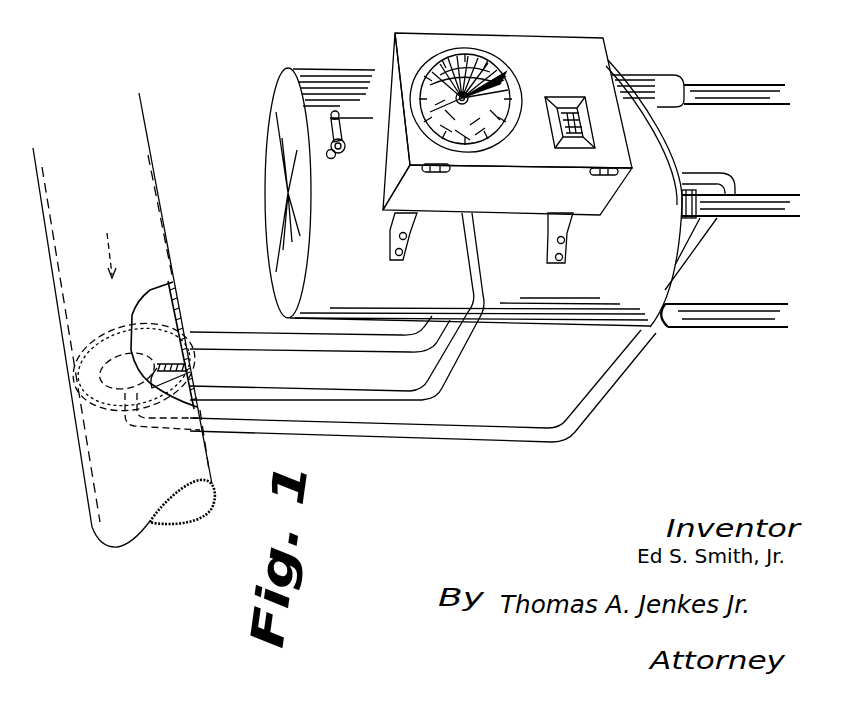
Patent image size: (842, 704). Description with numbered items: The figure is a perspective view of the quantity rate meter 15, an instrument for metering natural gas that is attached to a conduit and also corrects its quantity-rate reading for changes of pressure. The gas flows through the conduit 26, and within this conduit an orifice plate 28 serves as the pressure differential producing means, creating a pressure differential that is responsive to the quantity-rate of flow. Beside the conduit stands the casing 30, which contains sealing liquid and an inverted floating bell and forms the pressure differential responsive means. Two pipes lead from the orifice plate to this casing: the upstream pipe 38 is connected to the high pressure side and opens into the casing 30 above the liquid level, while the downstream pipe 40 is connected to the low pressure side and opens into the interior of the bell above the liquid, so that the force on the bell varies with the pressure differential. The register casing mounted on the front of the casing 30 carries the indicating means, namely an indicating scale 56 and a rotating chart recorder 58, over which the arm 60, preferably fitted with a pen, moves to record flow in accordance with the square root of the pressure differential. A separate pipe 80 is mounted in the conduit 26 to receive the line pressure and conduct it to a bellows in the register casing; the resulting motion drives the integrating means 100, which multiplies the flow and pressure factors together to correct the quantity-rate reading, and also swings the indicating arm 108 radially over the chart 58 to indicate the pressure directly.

The quantity rate meter 15 is at (434, 110).
The conduit 26 is at (170, 258).
The orifice plate 28 is at (80, 386).
The casing 30 is at (268, 258).
The upstream pipe 38 is at (222, 345).
The downstream pipe 40 is at (243, 392).
The indicating scale 56 is at (461, 91).
The rotating chart recorder 58 is at (458, 88).
The indicating arm 60 is at (476, 96).
The pipe 80 is at (236, 430).
The integrating means 100 is at (557, 123).
The indicating arm 108 is at (500, 78).